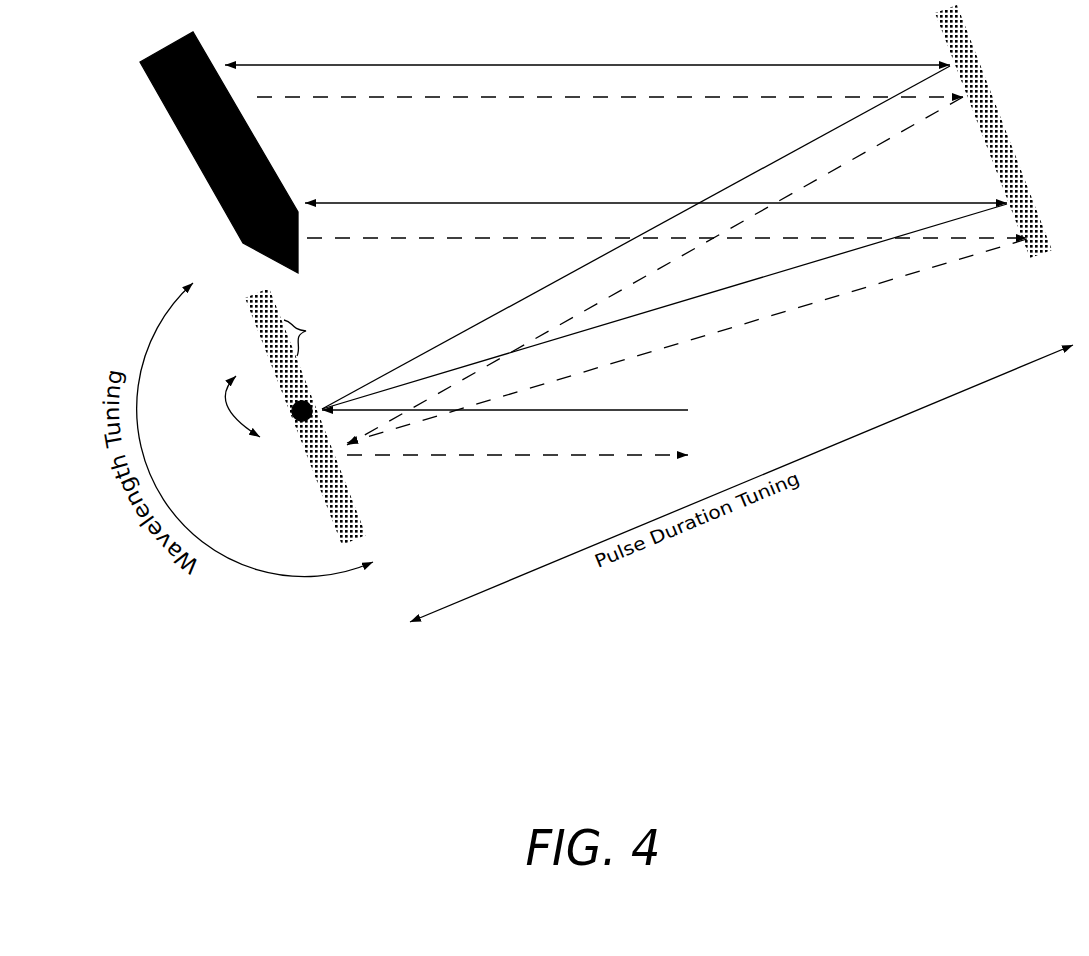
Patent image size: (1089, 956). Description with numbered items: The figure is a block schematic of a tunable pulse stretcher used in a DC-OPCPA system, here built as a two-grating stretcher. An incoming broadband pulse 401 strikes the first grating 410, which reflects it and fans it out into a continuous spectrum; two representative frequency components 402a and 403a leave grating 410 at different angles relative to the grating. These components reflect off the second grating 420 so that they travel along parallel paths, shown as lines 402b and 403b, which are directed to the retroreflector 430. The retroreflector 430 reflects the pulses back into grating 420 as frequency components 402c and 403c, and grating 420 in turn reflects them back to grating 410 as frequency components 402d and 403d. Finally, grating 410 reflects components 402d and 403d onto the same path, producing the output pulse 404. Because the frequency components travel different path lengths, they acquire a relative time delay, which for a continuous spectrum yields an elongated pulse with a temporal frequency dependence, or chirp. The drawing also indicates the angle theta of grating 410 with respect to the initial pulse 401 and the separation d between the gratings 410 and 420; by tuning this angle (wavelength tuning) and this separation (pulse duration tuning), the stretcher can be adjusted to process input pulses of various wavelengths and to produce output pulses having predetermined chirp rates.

The incoming broadband pulse 401 is at (525, 407).
The frequency component 402a is at (664, 306).
The frequency component 402b is at (656, 190).
The frequency component 402c is at (667, 251).
The frequency component 402d is at (687, 341).
The frequency component 403a is at (636, 237).
The frequency component 403b is at (587, 51).
The frequency component 403c is at (610, 110).
The frequency component 403d is at (655, 271).
The output pulse 404 is at (517, 480).
The grating 410 is at (280, 416).
The grating 420 is at (1001, 131).
The retroreflector 430 is at (204, 152).